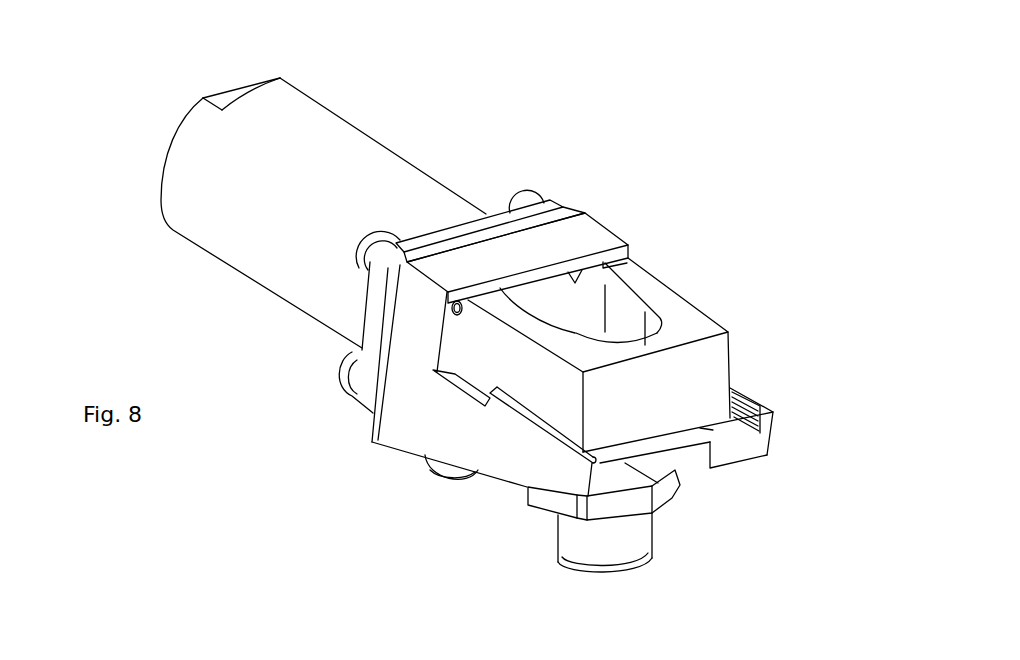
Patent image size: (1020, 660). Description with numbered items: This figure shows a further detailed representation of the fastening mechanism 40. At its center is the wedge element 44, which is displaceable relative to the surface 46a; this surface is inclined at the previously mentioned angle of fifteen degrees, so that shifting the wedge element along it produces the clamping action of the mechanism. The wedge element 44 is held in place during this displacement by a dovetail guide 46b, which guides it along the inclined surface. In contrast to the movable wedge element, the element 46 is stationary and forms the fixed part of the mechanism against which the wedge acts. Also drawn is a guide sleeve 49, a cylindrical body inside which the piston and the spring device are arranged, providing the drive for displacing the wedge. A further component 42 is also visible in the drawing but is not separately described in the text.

The fastening mechanism 40 is at (597, 170).
The mounting boss 42 is at (587, 548).
The wedge element 44 is at (488, 350).
The element 46 is at (423, 440).
The surface 46a is at (717, 433).
The dovetail guide 46b is at (770, 417).
The guide sleeve 49 is at (305, 117).